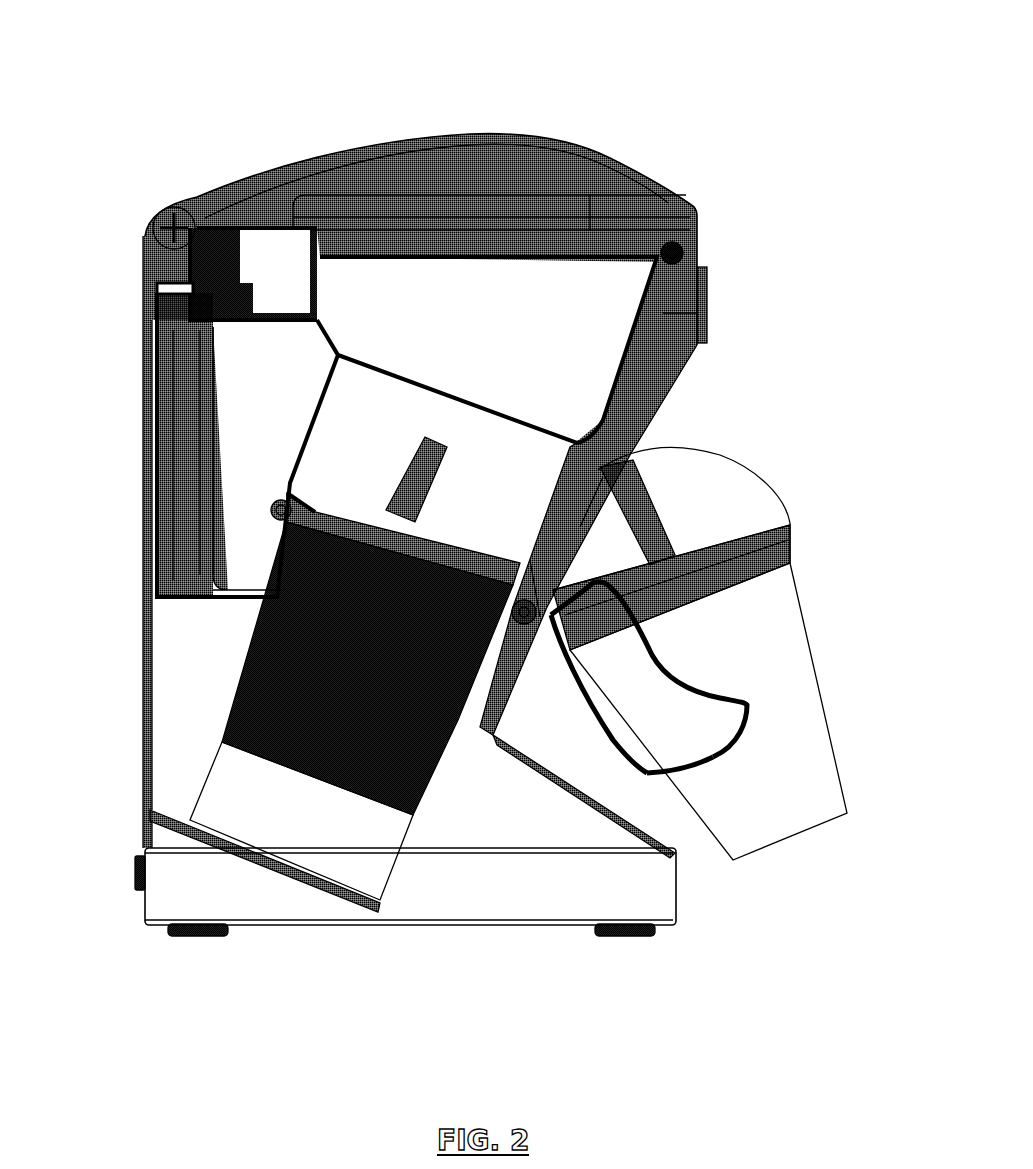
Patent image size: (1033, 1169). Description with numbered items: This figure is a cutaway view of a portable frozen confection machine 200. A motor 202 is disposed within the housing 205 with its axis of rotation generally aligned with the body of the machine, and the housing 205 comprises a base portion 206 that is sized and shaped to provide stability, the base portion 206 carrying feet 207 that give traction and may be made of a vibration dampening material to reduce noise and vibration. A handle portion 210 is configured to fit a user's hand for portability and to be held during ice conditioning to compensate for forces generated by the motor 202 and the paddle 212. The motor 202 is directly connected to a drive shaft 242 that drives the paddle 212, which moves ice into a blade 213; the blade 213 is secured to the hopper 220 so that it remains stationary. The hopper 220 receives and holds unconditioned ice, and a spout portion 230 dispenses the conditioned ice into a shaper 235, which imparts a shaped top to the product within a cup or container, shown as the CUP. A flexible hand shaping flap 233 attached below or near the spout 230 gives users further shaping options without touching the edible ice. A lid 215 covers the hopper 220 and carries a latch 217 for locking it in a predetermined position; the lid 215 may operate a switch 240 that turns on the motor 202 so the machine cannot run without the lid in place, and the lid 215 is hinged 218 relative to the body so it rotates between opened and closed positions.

The frozen confection machine 200 is at (233, 80).
The motor 202 is at (255, 700).
The housing 205 is at (146, 610).
The base portion 206 is at (640, 893).
The feet 207 is at (200, 925).
The handle portion 210 is at (187, 520).
The paddle 212 is at (423, 507).
The blade 213 is at (530, 558).
The lid 215 is at (560, 177).
The latch 217 is at (692, 260).
The hinge 218 is at (162, 230).
The hopper 220 is at (600, 373).
The spout portion 230 is at (577, 530).
The flexible hand shaping flap 233 is at (620, 733).
The shaper 235 is at (700, 527).
The switch 240 is at (223, 297).
The drive shaft 242 is at (405, 552).
The cup CUP is at (755, 727).